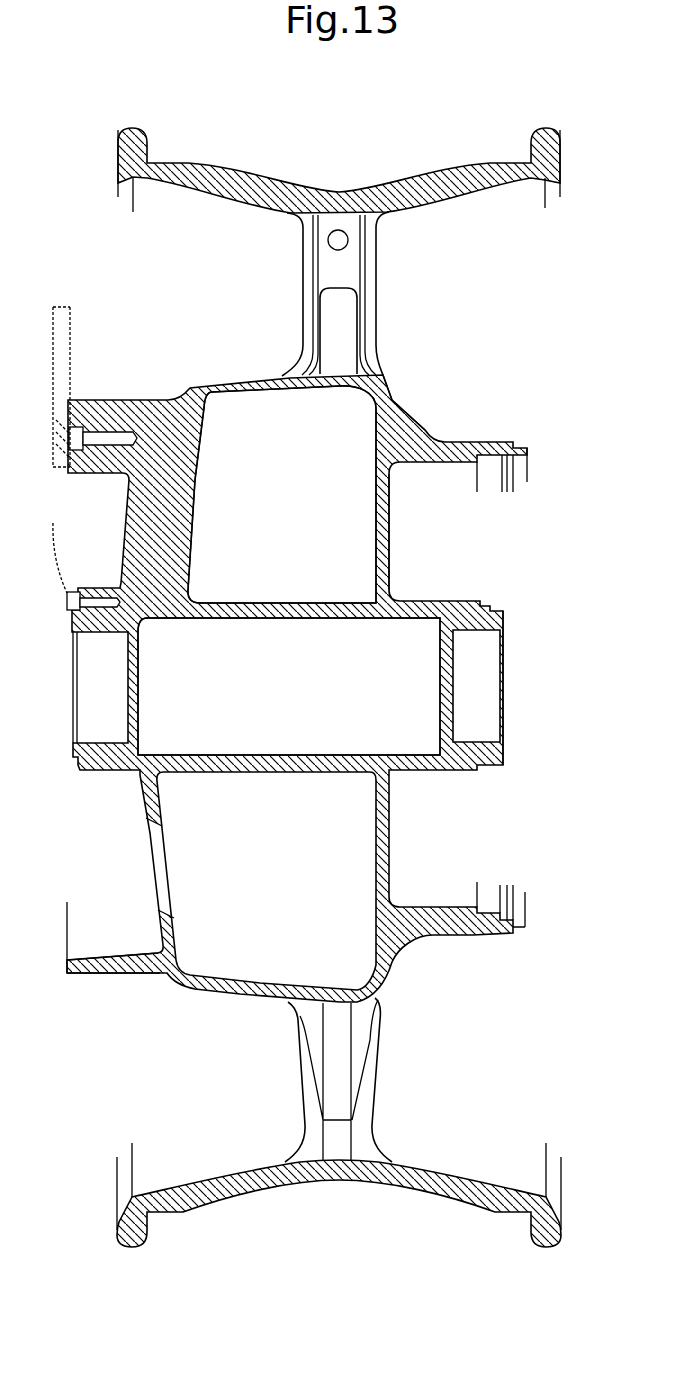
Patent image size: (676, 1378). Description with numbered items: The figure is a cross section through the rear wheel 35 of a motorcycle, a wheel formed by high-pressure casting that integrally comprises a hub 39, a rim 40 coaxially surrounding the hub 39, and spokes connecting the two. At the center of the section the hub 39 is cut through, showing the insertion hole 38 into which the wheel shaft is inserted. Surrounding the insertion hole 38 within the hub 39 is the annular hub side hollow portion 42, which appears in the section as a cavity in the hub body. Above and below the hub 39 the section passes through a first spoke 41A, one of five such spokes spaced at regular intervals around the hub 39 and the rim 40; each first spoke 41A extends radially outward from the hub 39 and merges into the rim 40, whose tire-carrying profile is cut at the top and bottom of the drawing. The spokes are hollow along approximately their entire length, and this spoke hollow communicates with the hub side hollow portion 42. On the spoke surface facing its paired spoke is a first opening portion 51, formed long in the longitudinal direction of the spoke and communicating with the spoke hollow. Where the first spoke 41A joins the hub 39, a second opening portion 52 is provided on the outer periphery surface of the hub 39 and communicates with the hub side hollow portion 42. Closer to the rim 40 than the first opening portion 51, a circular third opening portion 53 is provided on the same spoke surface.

The wheel 35 is at (146, 980).
The insertion hole 38 is at (241, 638).
The hub 39 is at (183, 402).
The rim 40 is at (195, 177).
The first spoke 41A is at (378, 262).
The hub side hollow portion 42 is at (318, 497).
The first opening portion 51 is at (356, 318).
The second opening portion 52 is at (394, 405).
The third opening portion 53 is at (331, 238).